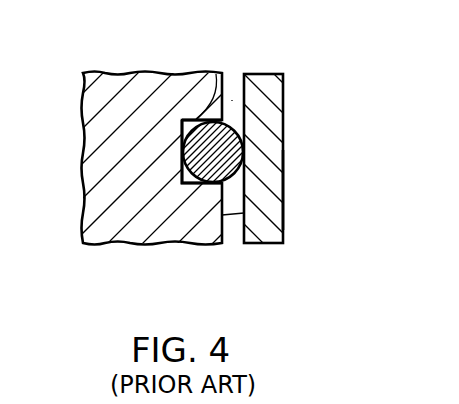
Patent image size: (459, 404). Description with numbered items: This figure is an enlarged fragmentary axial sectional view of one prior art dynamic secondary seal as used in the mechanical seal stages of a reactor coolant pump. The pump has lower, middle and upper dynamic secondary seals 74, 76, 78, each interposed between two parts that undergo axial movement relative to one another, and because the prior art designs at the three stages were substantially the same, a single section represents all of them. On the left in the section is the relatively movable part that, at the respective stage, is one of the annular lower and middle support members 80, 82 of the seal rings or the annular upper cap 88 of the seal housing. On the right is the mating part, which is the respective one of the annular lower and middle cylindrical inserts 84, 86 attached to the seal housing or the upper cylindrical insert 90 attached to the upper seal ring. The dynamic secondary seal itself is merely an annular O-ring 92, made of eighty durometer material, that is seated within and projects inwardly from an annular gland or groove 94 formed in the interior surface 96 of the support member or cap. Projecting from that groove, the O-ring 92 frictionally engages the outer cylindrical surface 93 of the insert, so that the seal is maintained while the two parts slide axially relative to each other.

The lower support member 80 is at (229, 202).
The middle support member 82 is at (229, 202).
The upper cap 88 is at (128, 71).
The annular gland or groove 94 is at (216, 73).
The outer cylindrical surface 93 is at (232, 100).
The annular O-ring 92 is at (184, 148).
The lower dynamic secondary seal 74 is at (228, 190).
The middle dynamic secondary seal 76 is at (228, 190).
The upper dynamic secondary seal 78 is at (253, 130).
The lower cylindrical insert 84 is at (362, 190).
The middle cylindrical insert 86 is at (362, 190).
The upper cylindrical insert 90 is at (283, 191).
The interior surface 96 is at (244, 213).